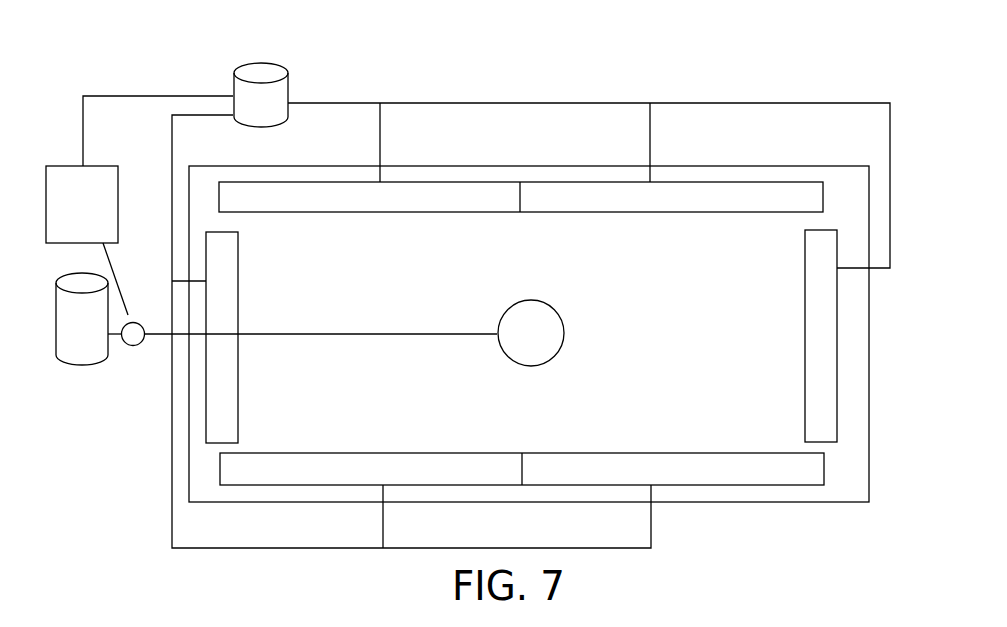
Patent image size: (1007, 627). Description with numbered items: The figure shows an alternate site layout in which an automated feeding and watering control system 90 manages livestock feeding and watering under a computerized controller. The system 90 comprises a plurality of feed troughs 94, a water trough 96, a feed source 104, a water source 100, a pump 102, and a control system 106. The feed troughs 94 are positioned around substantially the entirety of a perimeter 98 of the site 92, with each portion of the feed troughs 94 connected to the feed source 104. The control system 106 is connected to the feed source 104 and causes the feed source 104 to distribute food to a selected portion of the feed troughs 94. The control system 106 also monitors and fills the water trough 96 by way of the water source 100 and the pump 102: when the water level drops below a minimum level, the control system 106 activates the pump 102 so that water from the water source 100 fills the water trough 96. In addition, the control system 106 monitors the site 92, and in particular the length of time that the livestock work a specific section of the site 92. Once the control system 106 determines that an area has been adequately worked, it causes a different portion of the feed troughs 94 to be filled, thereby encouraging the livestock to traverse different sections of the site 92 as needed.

The automated feeding and watering control system 90 is at (468, 325).
The site 92 is at (529, 321).
The feed troughs 94 is at (215, 311).
The water trough 96 is at (550, 338).
The perimeter 98 is at (762, 503).
The water source 100 is at (82, 352).
The pump 102 is at (134, 322).
The feed source 104 is at (245, 88).
The control system 106 is at (70, 183).